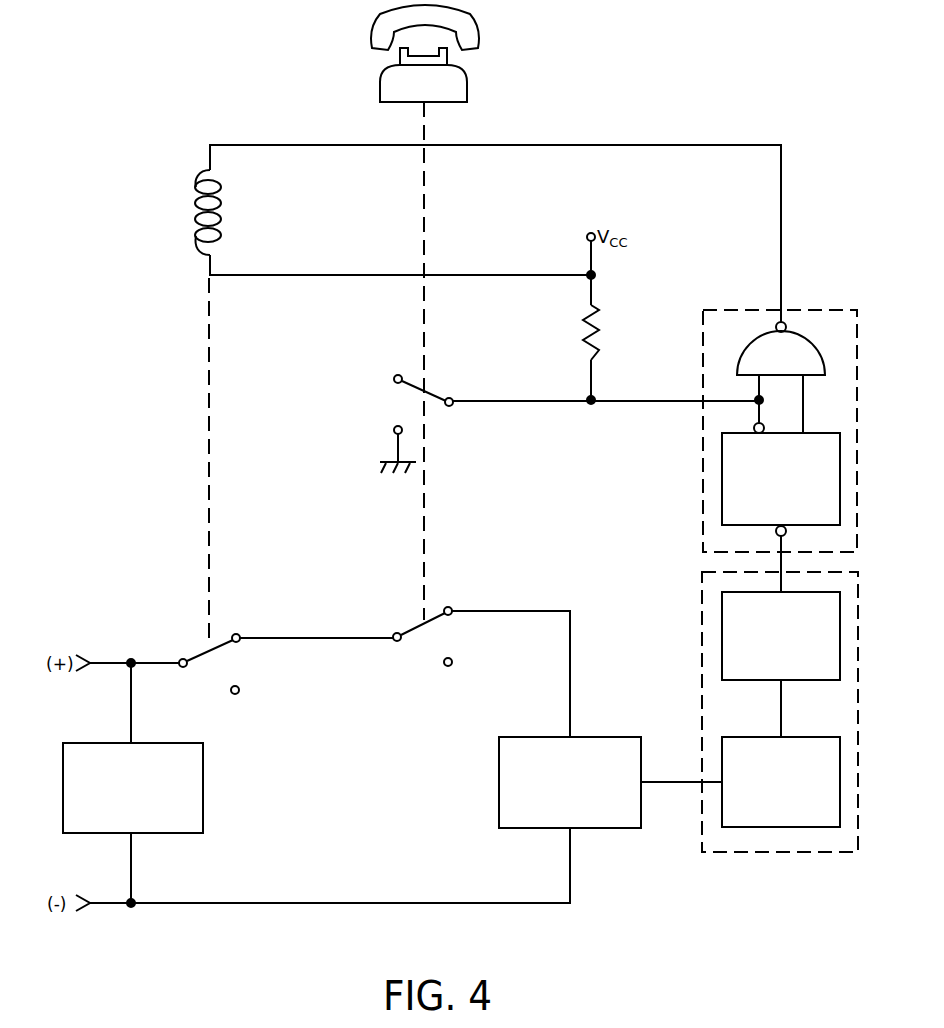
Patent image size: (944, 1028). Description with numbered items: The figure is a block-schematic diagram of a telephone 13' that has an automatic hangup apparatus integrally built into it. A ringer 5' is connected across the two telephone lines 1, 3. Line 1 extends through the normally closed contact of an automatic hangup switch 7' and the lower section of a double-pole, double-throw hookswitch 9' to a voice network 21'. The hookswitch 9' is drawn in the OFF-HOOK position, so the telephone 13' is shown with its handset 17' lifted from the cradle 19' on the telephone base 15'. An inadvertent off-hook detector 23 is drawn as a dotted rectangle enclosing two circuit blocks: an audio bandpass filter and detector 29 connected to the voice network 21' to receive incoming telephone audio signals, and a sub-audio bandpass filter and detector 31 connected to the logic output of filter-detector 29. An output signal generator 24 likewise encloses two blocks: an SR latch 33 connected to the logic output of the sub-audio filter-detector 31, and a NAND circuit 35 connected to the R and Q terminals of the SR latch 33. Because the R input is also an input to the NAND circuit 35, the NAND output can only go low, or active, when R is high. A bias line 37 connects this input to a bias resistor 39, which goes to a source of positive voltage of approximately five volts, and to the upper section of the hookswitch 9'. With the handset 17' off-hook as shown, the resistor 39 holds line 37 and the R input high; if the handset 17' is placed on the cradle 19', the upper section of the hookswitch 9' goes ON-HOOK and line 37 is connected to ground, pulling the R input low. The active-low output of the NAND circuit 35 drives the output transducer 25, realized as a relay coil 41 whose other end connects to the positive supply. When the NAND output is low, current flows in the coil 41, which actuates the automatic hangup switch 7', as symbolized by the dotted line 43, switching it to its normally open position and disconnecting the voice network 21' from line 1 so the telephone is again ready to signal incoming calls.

The line 1 is at (100, 663).
The line 3 is at (118, 903).
The ringer 5' is at (159, 788).
The automatic hangup switch 7' is at (210, 661).
The DPDT hookswitch 9' is at (423, 511).
The telephone 13' is at (213, 77).
The telephone base 15' is at (400, 87).
The handset 17' is at (396, 27).
The cradle 19' is at (471, 54).
The voice network 21' is at (570, 806).
The inadvertent off-hook detector 23 is at (770, 852).
The output signal generator 24 is at (808, 310).
The output transducer 25 is at (157, 252).
The audio bandpass filter and detector 29 is at (722, 762).
The sub-audio bandpass filter and detector 31 is at (722, 655).
The SR latch 33 is at (722, 492).
The NAND circuit 35 is at (757, 340).
The bias line 37 is at (652, 400).
The bias resistor 39 is at (585, 326).
The relay coil 41 is at (196, 220).
The dotted line 43 is at (209, 385).